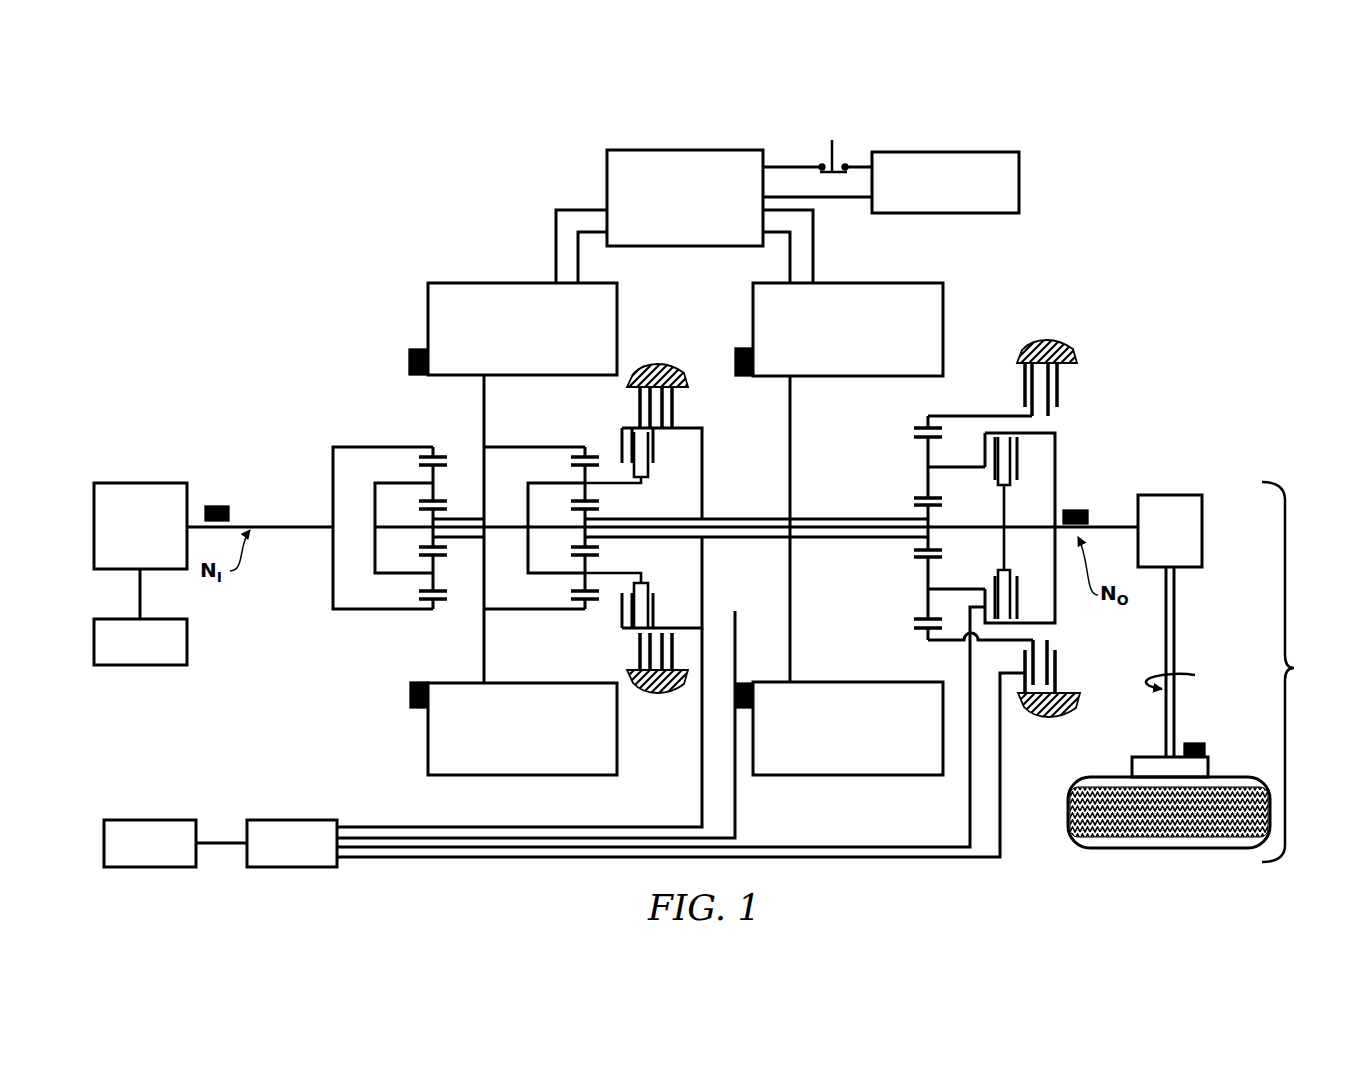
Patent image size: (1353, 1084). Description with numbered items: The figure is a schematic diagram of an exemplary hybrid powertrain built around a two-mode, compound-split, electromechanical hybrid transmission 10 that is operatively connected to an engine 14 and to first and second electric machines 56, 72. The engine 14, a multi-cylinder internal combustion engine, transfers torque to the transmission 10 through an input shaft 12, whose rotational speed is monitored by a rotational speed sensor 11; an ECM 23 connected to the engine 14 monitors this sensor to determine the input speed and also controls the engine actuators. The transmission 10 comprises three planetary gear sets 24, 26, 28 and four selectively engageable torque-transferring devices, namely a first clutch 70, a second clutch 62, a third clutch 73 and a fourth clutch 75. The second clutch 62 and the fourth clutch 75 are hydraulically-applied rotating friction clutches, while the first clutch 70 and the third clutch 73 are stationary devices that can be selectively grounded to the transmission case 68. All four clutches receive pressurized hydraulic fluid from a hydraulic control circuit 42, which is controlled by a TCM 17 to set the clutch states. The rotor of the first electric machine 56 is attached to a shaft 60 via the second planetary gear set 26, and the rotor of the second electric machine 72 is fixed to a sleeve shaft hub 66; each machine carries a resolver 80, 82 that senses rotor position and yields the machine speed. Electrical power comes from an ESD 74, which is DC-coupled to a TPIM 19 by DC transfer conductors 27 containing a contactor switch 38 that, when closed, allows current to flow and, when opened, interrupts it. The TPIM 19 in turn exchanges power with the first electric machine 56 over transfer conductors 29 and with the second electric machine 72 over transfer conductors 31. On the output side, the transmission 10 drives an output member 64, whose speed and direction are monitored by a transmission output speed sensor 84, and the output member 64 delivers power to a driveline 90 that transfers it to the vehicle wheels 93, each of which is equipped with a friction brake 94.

The electromechanical hybrid transmission 10 is at (388, 247).
The rotational speed sensor 11 is at (216, 506).
The input shaft 12 is at (290, 524).
The engine 14 is at (143, 483).
The transmission control module 17 is at (130, 820).
The transmission power inverter control module 19 is at (607, 165).
The engine control module 23 is at (185, 660).
The first planetary gear set 24 is at (422, 440).
The second planetary gear set 26 is at (580, 440).
The DC transfer conductors 27 is at (777, 164).
The third planetary gear set 28 is at (924, 415).
The transfer conductors 29 is at (556, 240).
The transfer conductors 31 is at (813, 240).
The contactor switch 38 is at (838, 150).
The hydraulic control circuit 42 is at (262, 820).
The first electric machine 56 is at (428, 315).
The shaft 60 is at (977, 525).
The clutch C2 62 is at (1047, 473).
The output member 64 is at (1112, 525).
The sleeve shaft hub 66 is at (830, 517).
The transmission case 68 is at (656, 364).
The clutch C1 70 is at (1016, 382).
The second electric machine 72 is at (943, 300).
The clutch C3 73 is at (680, 406).
The electrical energy storage device 74 is at (1019, 168).
The clutch C4 75 is at (658, 458).
The resolver 80 is at (409, 362).
The resolver 82 is at (743, 348).
The transmission output speed sensor 84 is at (1078, 508).
The driveline 90 is at (1294, 667).
The vehicle wheel 93 is at (1132, 765).
The friction brake 94 is at (1196, 742).